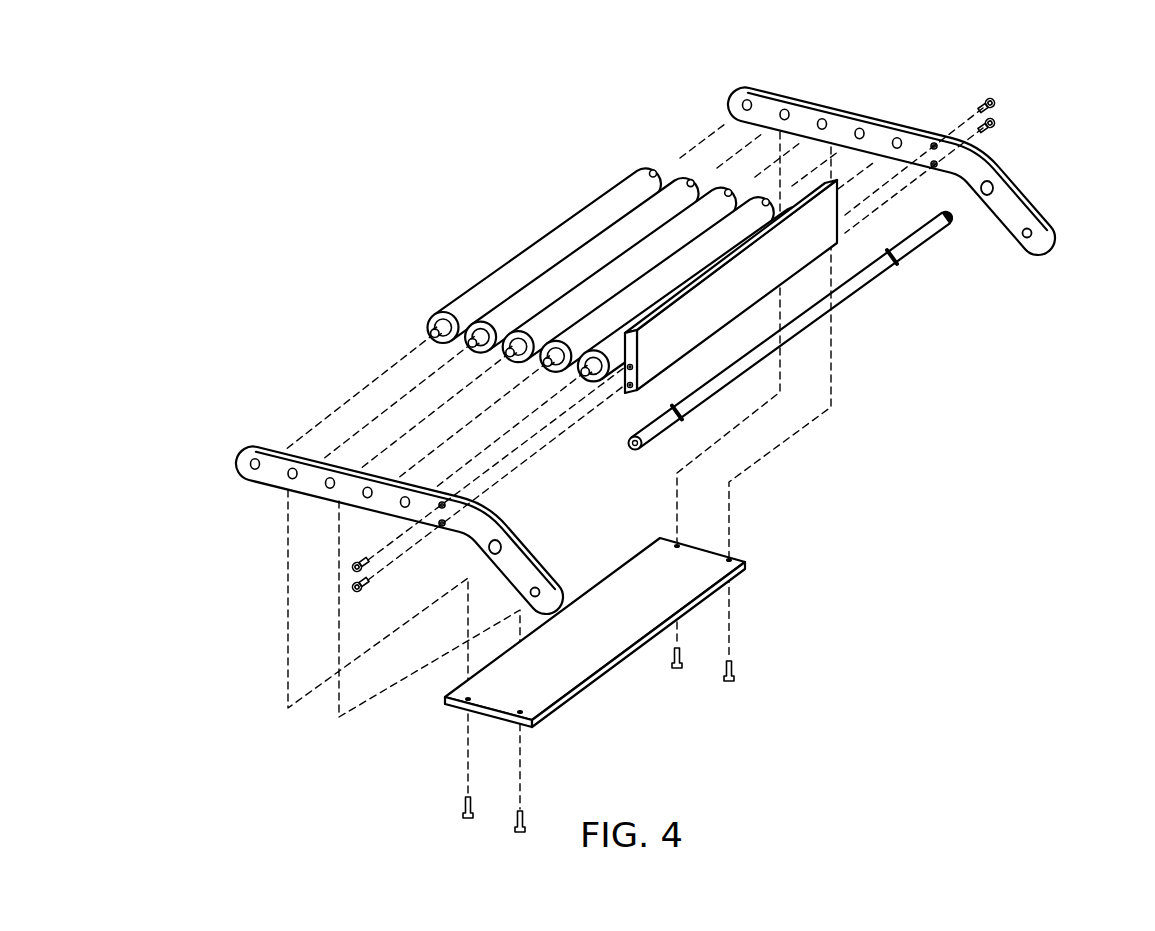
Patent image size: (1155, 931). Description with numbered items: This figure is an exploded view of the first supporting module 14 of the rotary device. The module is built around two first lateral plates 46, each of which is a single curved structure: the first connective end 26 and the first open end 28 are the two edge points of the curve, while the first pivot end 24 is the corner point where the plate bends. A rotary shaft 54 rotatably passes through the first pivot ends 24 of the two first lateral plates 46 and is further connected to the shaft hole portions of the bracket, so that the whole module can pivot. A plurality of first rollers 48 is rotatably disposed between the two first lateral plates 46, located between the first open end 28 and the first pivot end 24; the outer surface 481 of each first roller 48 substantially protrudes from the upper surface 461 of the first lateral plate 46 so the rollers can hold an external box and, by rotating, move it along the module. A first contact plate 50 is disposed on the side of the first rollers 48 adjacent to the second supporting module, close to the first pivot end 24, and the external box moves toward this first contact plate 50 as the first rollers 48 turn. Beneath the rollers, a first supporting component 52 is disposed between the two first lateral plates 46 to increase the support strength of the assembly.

The first supporting module 14 is at (399, 146).
The first pivot end 24 is at (507, 536).
The first connective end 26 is at (551, 603).
The first open end 28 is at (233, 470).
The first lateral plate 46 is at (312, 490).
The upper surface 461 is at (408, 485).
The first roller 48 is at (583, 374).
The outer surface 481 is at (735, 214).
The first contact plate 50 is at (838, 240).
The first supporting component 52 is at (575, 660).
The rotary shaft 54 is at (855, 283).